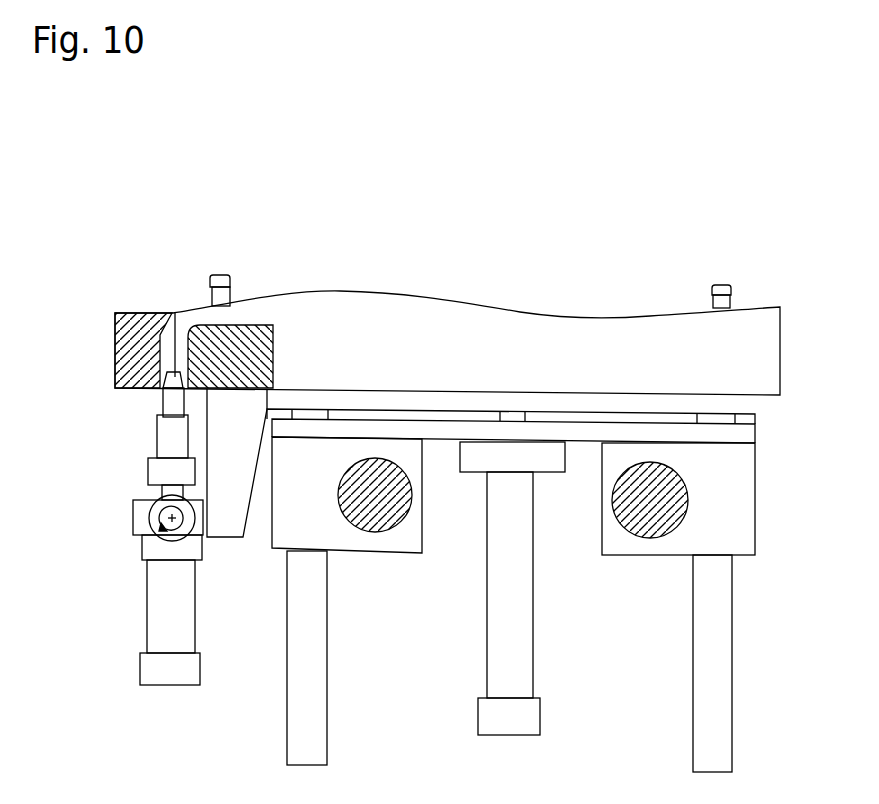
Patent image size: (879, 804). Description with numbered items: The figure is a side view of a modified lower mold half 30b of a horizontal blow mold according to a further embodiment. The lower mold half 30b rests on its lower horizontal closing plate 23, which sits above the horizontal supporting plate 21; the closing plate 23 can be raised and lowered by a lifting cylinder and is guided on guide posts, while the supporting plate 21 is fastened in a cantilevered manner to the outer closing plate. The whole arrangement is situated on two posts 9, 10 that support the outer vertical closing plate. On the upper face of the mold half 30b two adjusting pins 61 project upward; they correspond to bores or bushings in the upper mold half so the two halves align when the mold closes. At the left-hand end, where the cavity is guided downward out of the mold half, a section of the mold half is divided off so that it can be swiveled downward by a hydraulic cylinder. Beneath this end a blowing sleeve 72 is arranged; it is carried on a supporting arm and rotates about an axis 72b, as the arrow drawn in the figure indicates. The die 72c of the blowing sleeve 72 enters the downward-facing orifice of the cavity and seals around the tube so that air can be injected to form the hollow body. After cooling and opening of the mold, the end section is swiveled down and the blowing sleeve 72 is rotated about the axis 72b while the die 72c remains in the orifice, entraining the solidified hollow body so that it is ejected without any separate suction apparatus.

The post 9 is at (375, 497).
The post 10 is at (650, 500).
The horizontal supporting plate 21 is at (396, 432).
The lower horizontal closing plate 23 is at (613, 403).
The lower mold half 30b is at (520, 343).
The adjusting pin 61 is at (220, 273).
The blowing sleeve 72 is at (172, 433).
The axis 72b is at (172, 517).
The die 72c is at (227, 513).